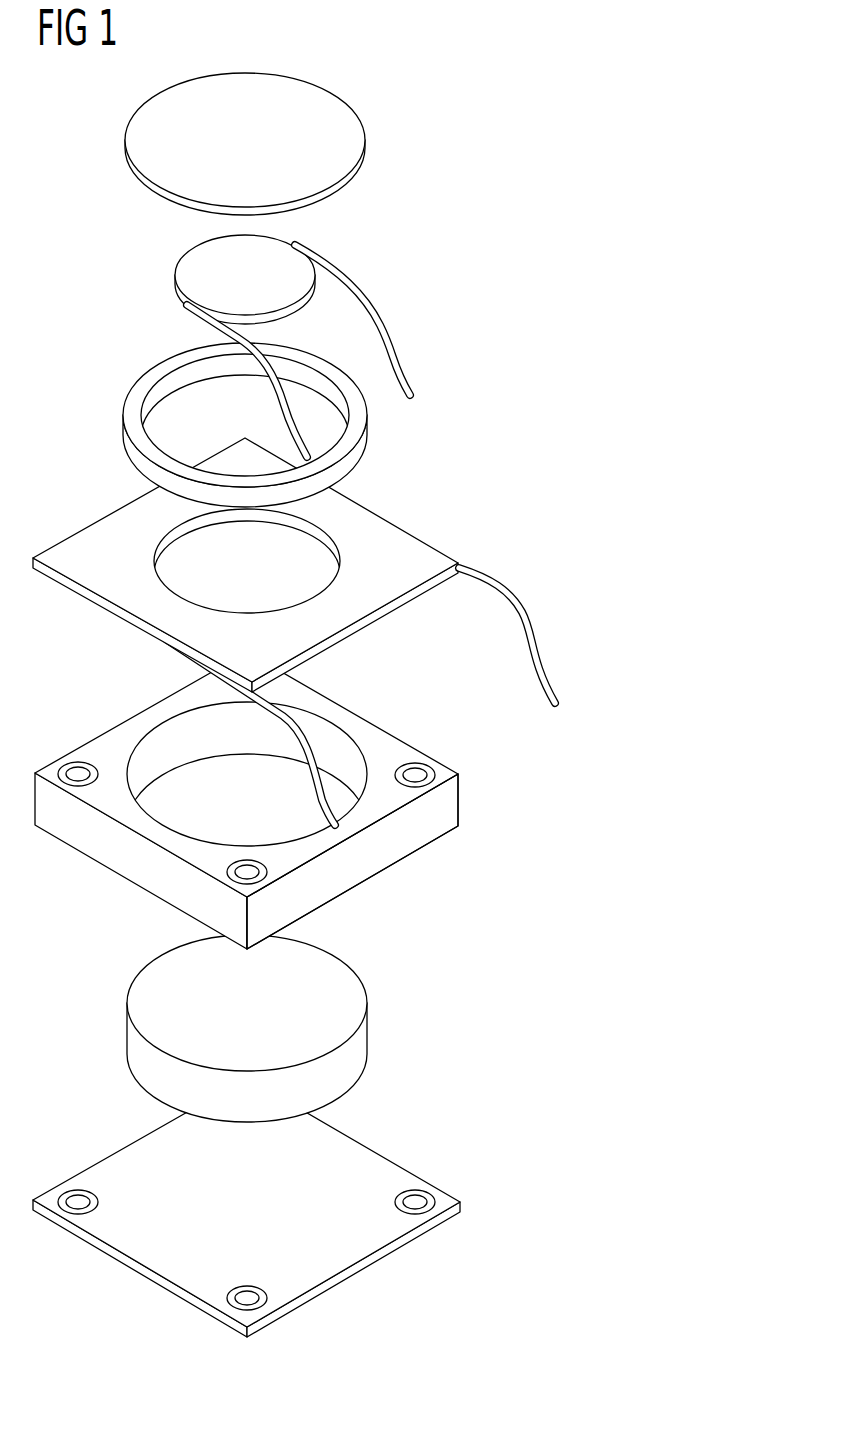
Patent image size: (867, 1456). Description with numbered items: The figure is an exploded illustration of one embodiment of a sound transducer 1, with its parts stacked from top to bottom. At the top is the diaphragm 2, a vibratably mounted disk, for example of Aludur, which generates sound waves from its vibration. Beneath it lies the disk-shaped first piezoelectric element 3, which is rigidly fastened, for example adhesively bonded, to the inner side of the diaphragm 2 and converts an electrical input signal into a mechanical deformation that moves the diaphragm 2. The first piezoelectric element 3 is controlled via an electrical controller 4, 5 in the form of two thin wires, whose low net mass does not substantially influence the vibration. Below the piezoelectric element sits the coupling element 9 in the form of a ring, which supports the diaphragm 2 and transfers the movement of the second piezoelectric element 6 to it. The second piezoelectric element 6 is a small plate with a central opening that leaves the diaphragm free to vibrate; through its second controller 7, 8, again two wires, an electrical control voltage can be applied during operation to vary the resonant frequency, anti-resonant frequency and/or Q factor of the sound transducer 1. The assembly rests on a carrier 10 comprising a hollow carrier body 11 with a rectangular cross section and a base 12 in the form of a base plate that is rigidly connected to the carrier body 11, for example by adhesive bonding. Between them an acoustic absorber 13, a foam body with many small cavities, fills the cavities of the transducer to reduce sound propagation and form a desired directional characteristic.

The sound transducer 1 is at (485, 100).
The diaphragm 2 is at (367, 142).
The first piezoelectric element 3 is at (187, 272).
The electrical controller 4 is at (277, 397).
The electrical controller 5 is at (387, 337).
The second piezoelectric element 6 is at (402, 533).
The second controller 7 is at (308, 783).
The second controller 8 is at (530, 637).
The coupling element 9 is at (368, 430).
The carrier 10 is at (463, 802).
The carrier body 11 is at (430, 828).
The base 12 is at (373, 1253).
The acoustic absorber 13 is at (368, 1037).